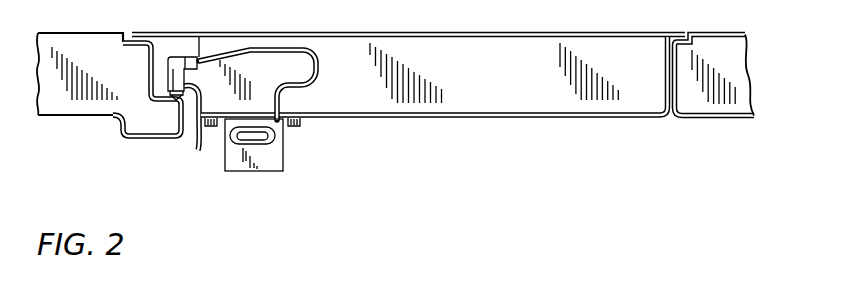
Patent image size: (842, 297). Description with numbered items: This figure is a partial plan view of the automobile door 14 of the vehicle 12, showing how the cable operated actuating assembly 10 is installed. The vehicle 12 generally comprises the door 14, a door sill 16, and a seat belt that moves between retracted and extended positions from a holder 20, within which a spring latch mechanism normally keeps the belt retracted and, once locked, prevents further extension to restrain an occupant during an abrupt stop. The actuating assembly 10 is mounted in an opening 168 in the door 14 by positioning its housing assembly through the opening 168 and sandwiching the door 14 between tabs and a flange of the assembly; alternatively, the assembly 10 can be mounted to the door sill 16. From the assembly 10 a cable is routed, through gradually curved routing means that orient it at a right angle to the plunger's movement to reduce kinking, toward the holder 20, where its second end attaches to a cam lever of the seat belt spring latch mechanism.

The cable operated actuating assembly 10 is at (201, 54).
The vehicle 12 is at (100, 131).
The door 14 is at (417, 32).
The door sill 16 is at (143, 138).
The opening 168 is at (198, 150).
The holder 20 is at (268, 163).